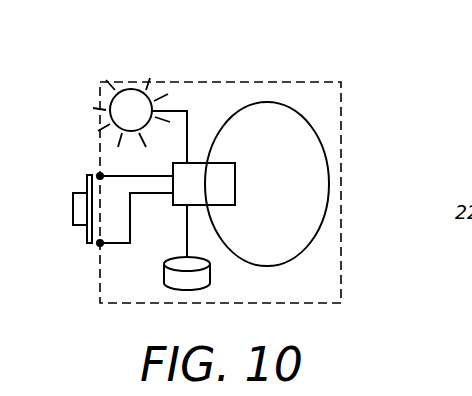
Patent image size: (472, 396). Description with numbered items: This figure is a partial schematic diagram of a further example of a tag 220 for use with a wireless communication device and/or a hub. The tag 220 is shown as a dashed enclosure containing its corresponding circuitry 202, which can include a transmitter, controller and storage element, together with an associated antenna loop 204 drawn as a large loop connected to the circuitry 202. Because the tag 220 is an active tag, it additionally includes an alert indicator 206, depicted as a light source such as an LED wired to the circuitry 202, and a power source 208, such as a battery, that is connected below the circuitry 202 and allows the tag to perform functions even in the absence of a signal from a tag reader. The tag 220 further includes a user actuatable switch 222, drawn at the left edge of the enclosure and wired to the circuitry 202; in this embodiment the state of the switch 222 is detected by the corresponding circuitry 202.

The tag 220 is at (353, 57).
The alert indicator 206 is at (139, 88).
The corresponding circuitry 202 is at (235, 184).
The antenna loop 204 is at (329, 184).
The power source 208 is at (164, 271).
The user actuatable switch 222 is at (73, 209).